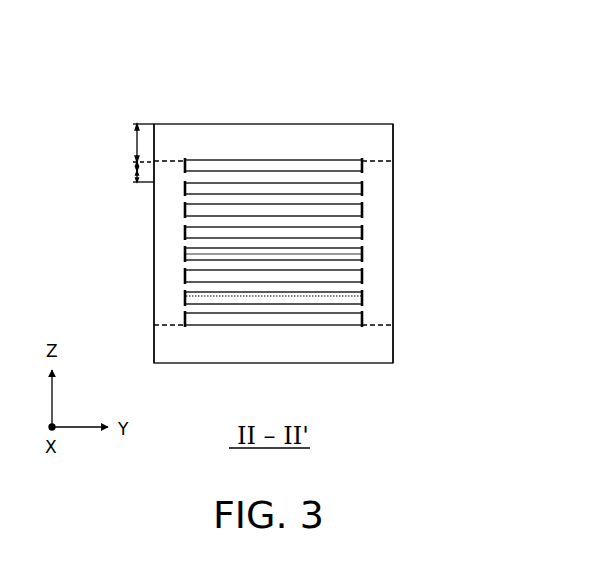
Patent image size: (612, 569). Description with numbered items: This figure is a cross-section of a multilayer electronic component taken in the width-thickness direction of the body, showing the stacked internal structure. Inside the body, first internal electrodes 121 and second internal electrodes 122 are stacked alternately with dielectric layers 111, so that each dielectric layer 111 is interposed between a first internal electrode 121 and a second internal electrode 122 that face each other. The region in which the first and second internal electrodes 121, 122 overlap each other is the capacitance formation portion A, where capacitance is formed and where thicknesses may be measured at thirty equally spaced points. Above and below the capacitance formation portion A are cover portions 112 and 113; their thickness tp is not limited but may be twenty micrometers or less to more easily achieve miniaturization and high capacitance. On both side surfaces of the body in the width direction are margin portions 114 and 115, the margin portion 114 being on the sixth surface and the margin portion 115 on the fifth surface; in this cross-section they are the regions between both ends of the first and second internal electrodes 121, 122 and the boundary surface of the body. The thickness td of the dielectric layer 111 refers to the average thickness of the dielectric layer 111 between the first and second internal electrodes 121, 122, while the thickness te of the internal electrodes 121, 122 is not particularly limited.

The cover portion 112 is at (279, 142).
The cover portion 113 is at (390, 343).
The dielectric layer 111 is at (364, 167).
The margin portion 114 is at (167, 281).
The margin portion 115 is at (390, 270).
The first internal electrode 121 is at (364, 160).
The second internal electrode 122 is at (364, 186).
The capacitance formation portion A is at (177, 246).
The thickness of the cover portions tp is at (132, 143).
The thickness of the internal electrodes te is at (134, 162).
The thickness of the dielectric layer td is at (133, 172).